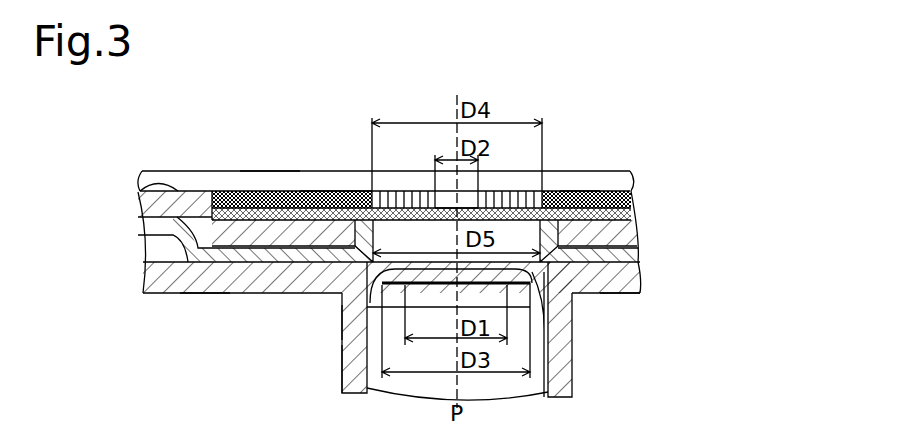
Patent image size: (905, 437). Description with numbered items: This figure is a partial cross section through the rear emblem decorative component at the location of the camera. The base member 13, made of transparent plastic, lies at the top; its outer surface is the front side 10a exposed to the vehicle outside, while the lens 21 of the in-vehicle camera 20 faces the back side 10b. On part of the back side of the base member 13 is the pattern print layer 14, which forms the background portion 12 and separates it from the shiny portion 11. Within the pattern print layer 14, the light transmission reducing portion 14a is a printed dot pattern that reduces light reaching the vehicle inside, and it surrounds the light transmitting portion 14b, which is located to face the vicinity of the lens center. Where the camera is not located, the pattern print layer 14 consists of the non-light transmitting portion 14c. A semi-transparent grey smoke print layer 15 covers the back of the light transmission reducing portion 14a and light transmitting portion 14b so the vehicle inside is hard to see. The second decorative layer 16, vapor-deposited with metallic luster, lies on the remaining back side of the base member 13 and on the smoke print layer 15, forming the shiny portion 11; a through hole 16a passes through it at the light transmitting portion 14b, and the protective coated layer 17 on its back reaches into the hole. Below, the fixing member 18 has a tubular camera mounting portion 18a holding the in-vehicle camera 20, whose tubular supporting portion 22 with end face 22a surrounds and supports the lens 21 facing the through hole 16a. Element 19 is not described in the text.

The front side 10a is at (263, 172).
The back side 10b is at (200, 293).
The shiny portion 11 is at (195, 141).
The background portion 12 is at (307, 143).
The base member 13 is at (628, 168).
The pattern print layer 14 is at (620, 188).
The light transmission reducing portion 14a is at (510, 190).
The light transmitting portion 14b is at (442, 190).
The non-light transmitting portion 14c is at (330, 190).
The smoke print layer 15 is at (628, 204).
The second decorative layer 16 is at (143, 184).
The through hole 16a is at (568, 192).
The coated layer 17 is at (162, 235).
The fixing member 18 is at (235, 293).
The camera mounting portion 18a is at (340, 350).
The lower surface of base plate 19 is at (640, 296).
The in-vehicle camera 20 is at (572, 373).
The lens 21 is at (572, 320).
The supporting portion 22 is at (572, 344).
The end face 22a is at (360, 322).